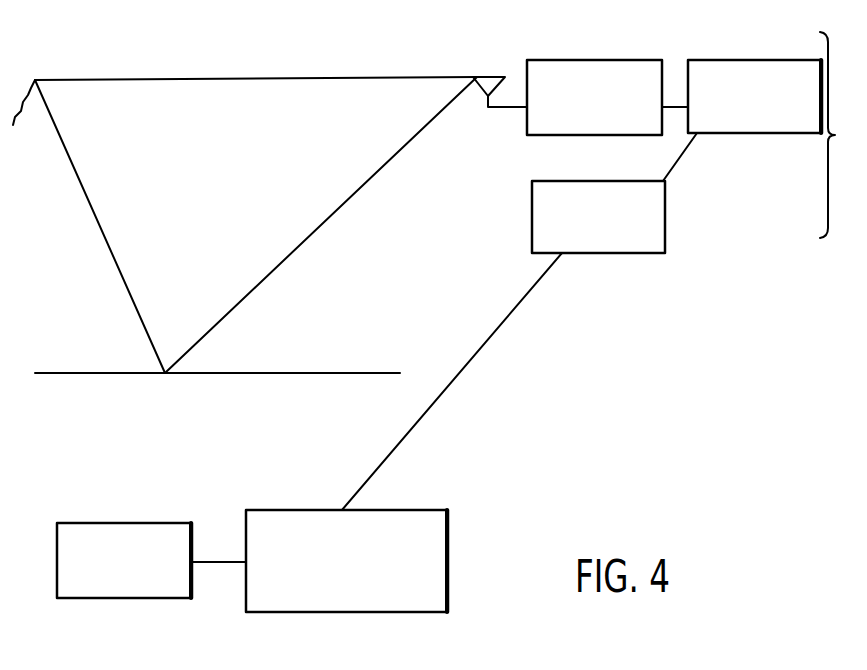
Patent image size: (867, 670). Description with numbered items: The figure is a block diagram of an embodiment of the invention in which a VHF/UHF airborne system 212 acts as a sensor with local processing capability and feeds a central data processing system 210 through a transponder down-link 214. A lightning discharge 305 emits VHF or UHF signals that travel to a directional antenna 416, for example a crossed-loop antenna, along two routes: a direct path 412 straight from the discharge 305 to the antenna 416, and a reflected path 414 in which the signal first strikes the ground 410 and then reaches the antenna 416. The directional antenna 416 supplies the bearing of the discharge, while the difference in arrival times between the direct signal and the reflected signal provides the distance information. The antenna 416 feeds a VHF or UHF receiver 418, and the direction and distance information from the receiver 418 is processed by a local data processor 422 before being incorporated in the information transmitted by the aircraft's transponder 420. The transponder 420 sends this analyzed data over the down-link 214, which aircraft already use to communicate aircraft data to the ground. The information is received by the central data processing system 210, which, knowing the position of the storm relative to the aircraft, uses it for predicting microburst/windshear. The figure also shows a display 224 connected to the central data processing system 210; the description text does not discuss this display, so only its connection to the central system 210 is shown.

The lightning discharge 305 is at (38, 74).
The direct path 412 is at (258, 80).
The reflected path 414 is at (330, 215).
The ground 410 is at (324, 372).
The directional antenna 416 is at (496, 68).
The VHF or UHF receiver 418 is at (608, 58).
The local data processor 422 is at (722, 58).
The VHF/UHF airborne system 212 is at (843, 135).
The transponder 420 is at (614, 214).
The transponder down-link 214 is at (467, 365).
The central data processing system 210 is at (441, 509).
The display 224 is at (178, 599).